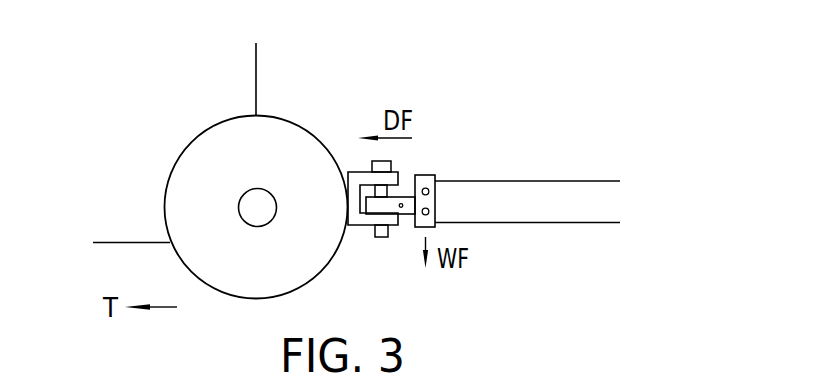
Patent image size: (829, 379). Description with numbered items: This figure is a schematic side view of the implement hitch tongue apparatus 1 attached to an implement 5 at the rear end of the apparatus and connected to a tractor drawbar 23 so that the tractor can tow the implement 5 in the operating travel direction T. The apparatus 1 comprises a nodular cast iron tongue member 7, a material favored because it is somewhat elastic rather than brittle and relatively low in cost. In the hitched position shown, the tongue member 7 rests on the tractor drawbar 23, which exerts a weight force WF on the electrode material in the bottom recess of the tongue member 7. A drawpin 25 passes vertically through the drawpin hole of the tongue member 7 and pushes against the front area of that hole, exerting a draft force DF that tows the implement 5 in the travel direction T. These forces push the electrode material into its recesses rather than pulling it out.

The implement hitch tongue apparatus 1 is at (408, 215).
The implement 5 is at (537, 181).
The tongue member 7 is at (402, 187).
The tractor drawbar 23 is at (365, 226).
The drawpin 25 is at (381, 237).